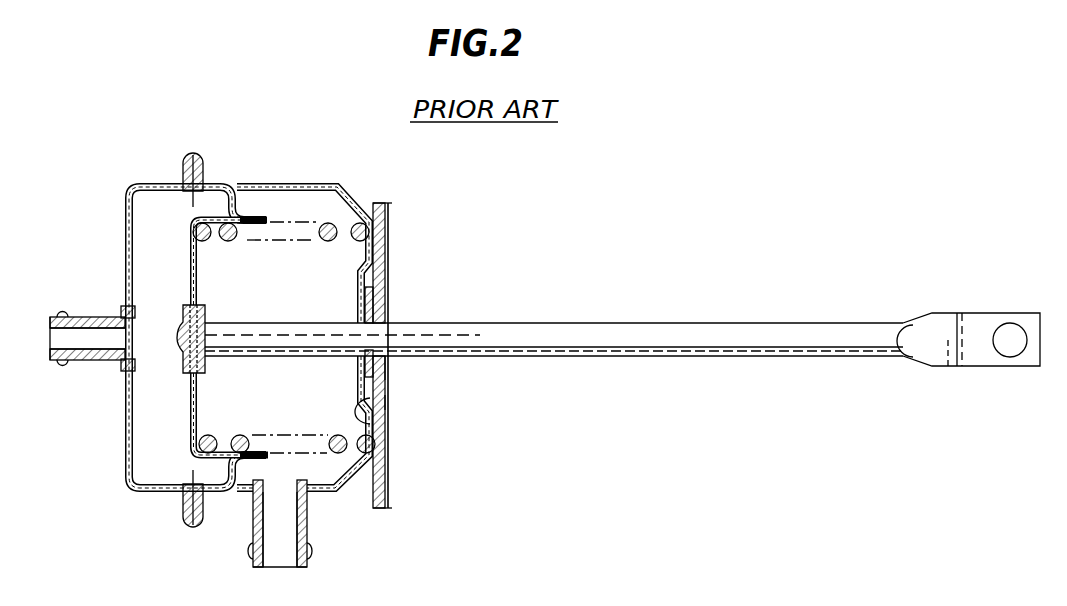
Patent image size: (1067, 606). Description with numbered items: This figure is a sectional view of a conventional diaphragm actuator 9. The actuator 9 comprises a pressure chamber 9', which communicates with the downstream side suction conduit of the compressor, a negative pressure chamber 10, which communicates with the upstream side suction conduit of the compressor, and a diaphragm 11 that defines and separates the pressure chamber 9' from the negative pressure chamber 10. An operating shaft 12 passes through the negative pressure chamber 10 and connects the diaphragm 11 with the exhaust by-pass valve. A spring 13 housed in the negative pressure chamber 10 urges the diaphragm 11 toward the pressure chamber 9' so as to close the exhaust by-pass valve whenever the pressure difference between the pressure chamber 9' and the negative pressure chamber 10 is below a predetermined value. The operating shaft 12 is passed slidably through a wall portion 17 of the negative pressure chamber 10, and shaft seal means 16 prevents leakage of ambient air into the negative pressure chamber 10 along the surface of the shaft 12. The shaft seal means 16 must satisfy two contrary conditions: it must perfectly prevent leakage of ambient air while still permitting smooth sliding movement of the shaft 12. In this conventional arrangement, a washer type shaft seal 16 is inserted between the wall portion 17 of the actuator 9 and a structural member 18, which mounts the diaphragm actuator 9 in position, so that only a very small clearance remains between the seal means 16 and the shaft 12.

The diaphragm actuator 9 is at (211, 360).
The pressure chamber 9' is at (111, 424).
The negative pressure chamber 10 is at (335, 273).
The diaphragm 11 is at (187, 443).
The operating shaft 12 is at (535, 323).
The spring 13 is at (332, 222).
The shaft seal means 16 is at (387, 364).
The wall portion 17 is at (372, 423).
The structural member 18 is at (387, 402).